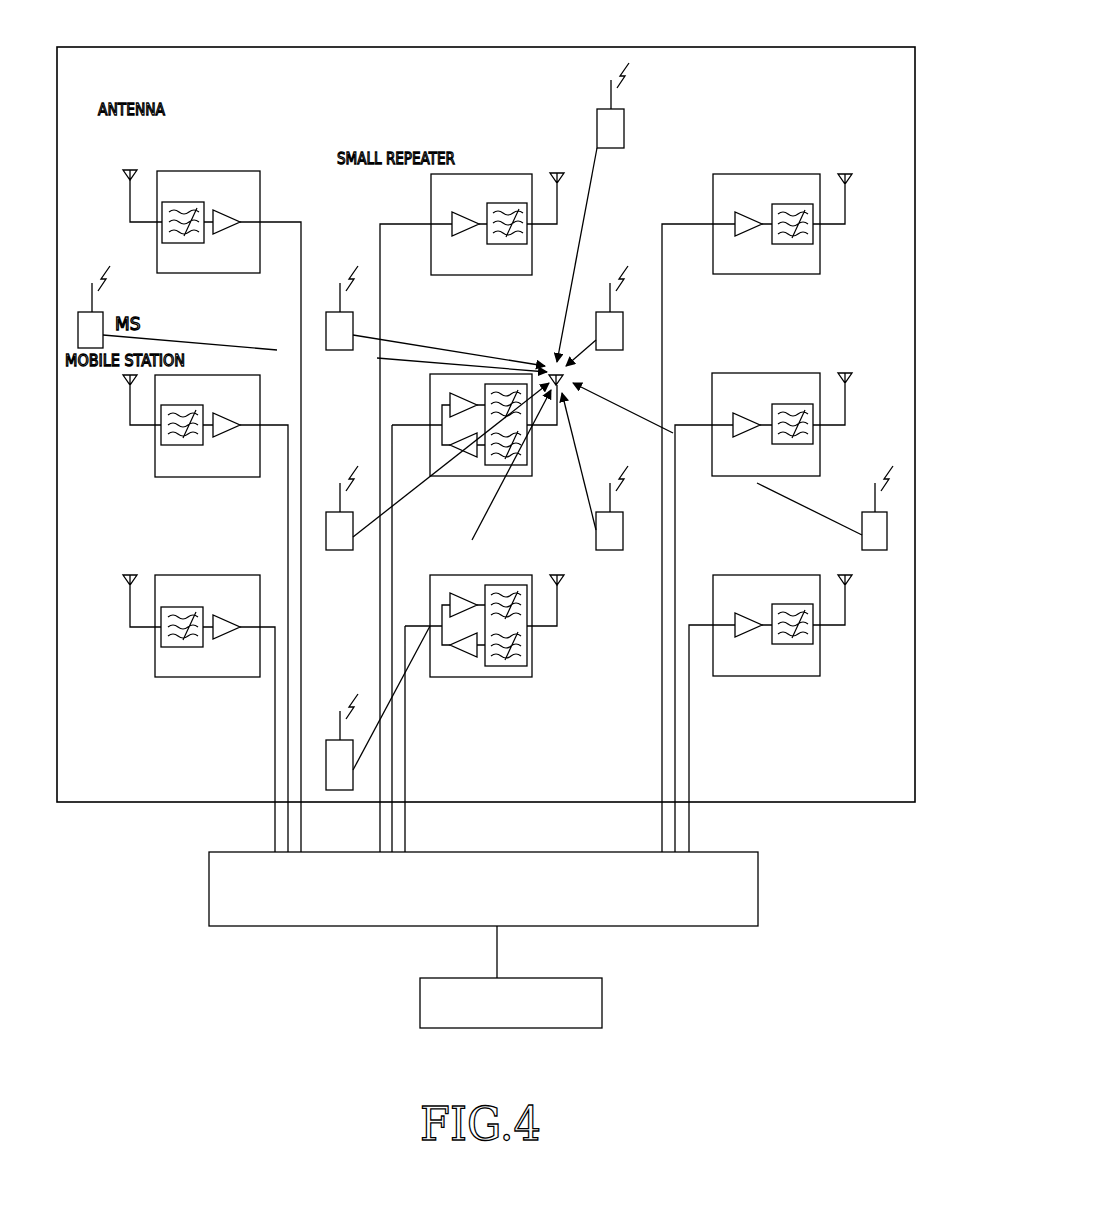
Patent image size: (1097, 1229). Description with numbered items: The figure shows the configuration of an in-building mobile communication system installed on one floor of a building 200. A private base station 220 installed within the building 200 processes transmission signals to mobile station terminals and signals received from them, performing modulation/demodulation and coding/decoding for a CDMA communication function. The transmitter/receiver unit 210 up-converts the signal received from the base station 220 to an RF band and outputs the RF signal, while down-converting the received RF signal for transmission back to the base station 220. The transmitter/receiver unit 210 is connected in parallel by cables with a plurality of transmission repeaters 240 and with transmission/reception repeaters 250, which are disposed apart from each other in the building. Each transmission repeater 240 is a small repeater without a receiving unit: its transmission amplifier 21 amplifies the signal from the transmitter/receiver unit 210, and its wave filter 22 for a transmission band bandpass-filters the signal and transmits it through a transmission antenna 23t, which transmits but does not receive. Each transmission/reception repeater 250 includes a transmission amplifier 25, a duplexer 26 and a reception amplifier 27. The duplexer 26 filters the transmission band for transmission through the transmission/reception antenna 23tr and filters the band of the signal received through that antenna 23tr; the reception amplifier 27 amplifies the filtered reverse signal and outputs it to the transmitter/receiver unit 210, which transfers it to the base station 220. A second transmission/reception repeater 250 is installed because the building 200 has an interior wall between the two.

The building 200 is at (778, 47).
The transmission repeater 240 is at (260, 185).
The transmission/reception repeater 250 is at (430, 388).
The transmission amplifier 21 is at (222, 212).
The wave filter for a transmission band 22 is at (183, 202).
The transmission antenna 23t is at (130, 170).
The transmission amplifier 25 is at (460, 393).
The duplexer 26 is at (517, 477).
The reception amplifier 27 is at (462, 455).
The transmission/reception antenna 23tr is at (552, 367).
The transmitter/receiver unit 210 is at (758, 889).
The base station 220 is at (602, 1004).